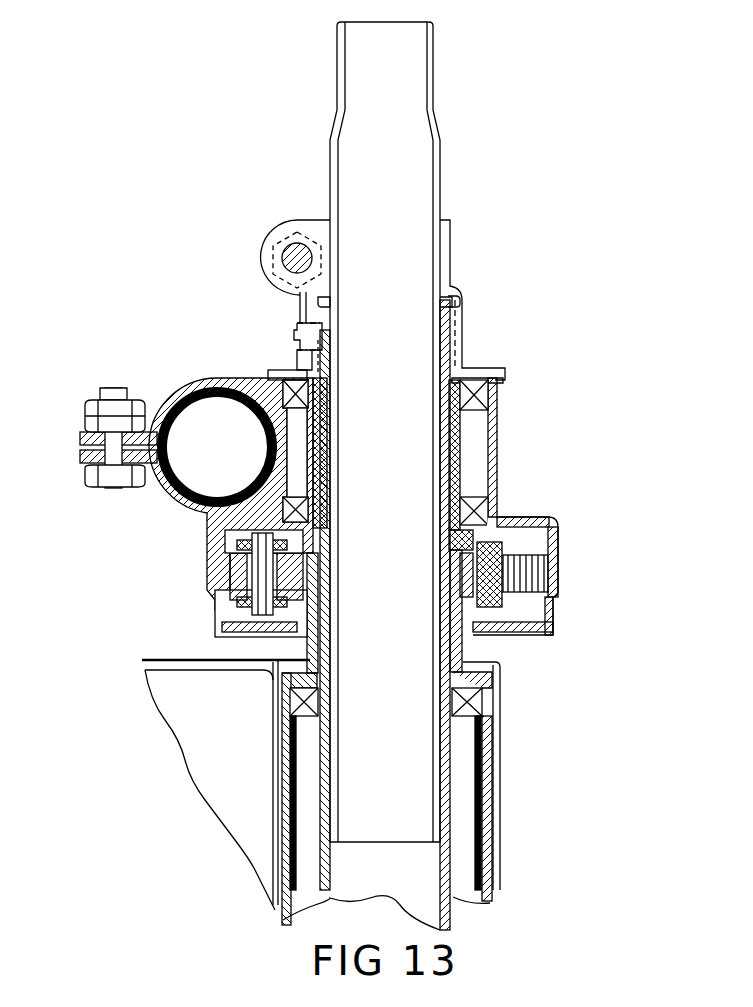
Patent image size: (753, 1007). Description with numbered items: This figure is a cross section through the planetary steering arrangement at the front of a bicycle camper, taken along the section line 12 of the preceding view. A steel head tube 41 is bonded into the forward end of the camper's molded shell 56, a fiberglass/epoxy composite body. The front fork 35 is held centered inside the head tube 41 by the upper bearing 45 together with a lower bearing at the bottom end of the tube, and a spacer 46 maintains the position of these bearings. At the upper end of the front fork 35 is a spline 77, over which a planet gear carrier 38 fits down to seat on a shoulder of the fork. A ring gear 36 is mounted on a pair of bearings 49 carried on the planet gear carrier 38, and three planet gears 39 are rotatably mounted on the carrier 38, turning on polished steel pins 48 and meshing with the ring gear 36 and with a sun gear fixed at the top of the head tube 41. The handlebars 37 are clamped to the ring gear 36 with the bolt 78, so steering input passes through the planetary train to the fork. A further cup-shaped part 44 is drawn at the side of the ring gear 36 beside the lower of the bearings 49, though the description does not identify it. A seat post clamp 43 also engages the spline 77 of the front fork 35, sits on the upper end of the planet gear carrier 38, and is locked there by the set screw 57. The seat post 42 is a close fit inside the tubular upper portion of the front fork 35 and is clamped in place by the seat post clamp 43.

The section line 12- 12 is at (200, 572).
The front fork 35 is at (490, 922).
The ring gear 36 is at (497, 460).
The handlebars 37 is at (275, 440).
The planet gear carrier 38 is at (455, 435).
The planet gears 39 is at (215, 598).
The head tube 41 is at (465, 652).
The seat post 42 is at (442, 165).
The seat post clamp 43 is at (452, 238).
The adjusting cup 44 is at (537, 635).
The upper bearing 45 is at (485, 700).
The spacer 46 is at (490, 740).
The steel pins 48 is at (265, 615).
The bearings 49 is at (472, 385).
The molded shell 56 is at (188, 660).
The set screw 57 is at (297, 332).
The spline 77 is at (450, 325).
The bolt 78 is at (110, 488).